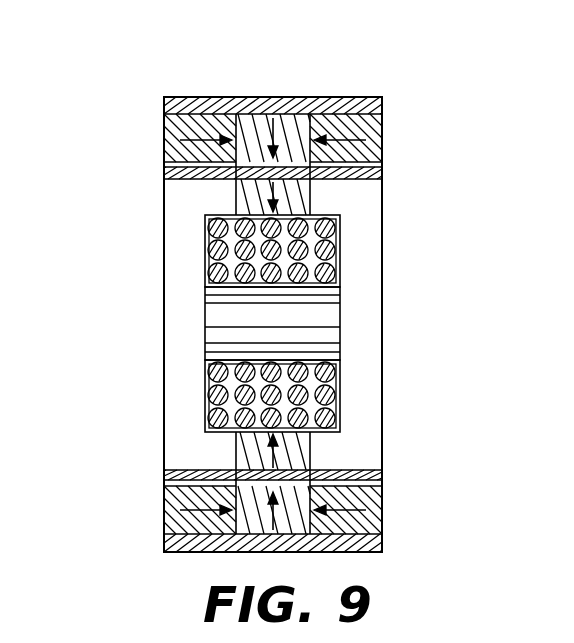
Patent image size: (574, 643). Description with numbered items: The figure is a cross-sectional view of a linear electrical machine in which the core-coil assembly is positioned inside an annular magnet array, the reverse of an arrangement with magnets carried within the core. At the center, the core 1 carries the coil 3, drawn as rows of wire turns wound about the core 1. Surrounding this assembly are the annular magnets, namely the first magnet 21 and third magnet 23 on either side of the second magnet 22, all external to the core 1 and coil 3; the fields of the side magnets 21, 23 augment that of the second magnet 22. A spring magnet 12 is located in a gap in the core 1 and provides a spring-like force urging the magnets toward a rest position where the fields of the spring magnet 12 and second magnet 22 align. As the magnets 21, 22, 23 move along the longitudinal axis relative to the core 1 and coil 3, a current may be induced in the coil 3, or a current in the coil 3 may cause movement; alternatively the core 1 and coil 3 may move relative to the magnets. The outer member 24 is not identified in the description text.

The core 1 is at (383, 206).
The coil 3 is at (337, 246).
The spring magnet 12 is at (312, 453).
The first magnet 21 is at (178, 124).
The second magnet 22 is at (298, 118).
The third magnet 23 is at (367, 125).
The yoke plate 24 is at (207, 96).